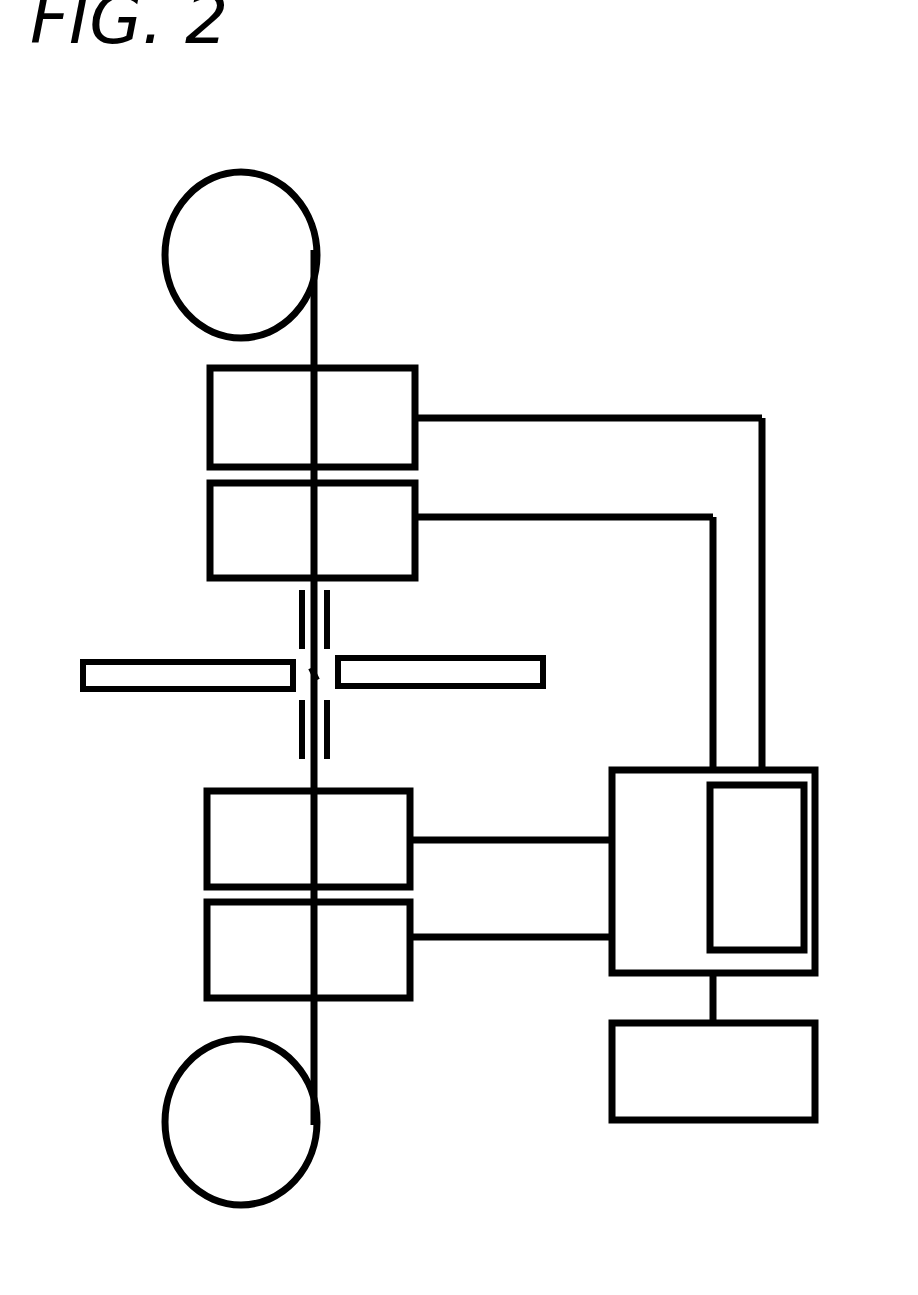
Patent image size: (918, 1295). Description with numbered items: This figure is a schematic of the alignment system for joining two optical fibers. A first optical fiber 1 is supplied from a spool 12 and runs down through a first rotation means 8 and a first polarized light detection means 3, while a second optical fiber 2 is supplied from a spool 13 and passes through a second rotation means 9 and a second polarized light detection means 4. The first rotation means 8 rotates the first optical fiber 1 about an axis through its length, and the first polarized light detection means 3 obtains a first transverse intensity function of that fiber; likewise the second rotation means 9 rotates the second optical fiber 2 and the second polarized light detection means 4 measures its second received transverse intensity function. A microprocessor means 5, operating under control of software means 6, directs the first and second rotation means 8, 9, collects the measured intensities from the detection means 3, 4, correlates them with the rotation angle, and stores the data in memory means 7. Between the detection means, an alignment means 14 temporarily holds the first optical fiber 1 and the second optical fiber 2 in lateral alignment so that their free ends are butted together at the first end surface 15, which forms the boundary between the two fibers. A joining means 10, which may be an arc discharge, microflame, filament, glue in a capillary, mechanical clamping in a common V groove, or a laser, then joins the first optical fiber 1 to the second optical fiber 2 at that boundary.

The first optical fiber 1 is at (316, 342).
The second optical fiber 2 is at (317, 1025).
The first polarized light detection means 3 is at (377, 542).
The second polarized light detection means 4 is at (377, 868).
The microprocessor means 5 is at (672, 895).
The software means 6 is at (775, 895).
The memory means 7 is at (730, 1095).
The first rotation means 8 is at (377, 444).
The second rotation means 9 is at (377, 970).
The joining means 10 is at (180, 690).
The spool 12 is at (200, 284).
The spool 13 is at (206, 1147).
The alignment means 14 is at (302, 631).
The first end surface 15 is at (315, 675).